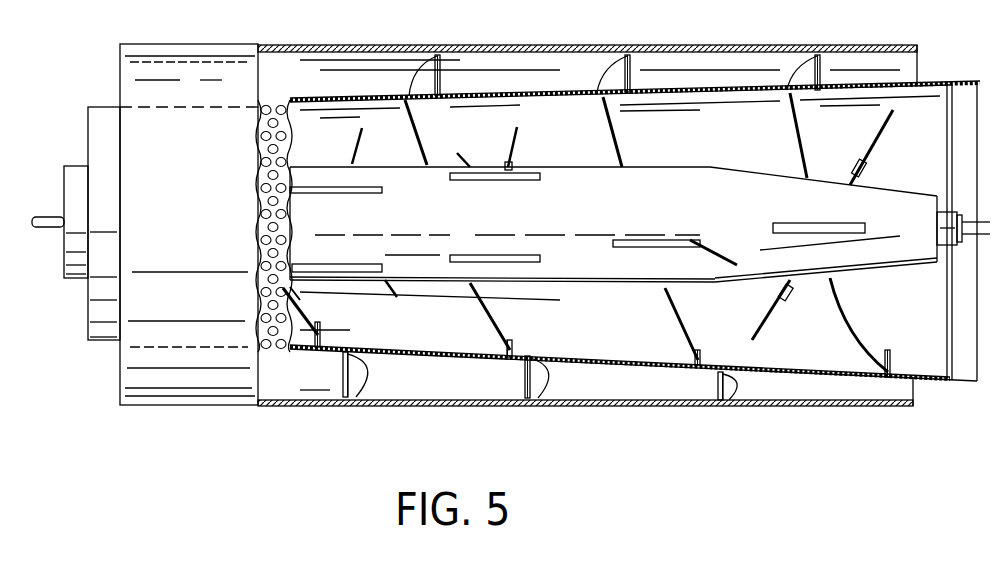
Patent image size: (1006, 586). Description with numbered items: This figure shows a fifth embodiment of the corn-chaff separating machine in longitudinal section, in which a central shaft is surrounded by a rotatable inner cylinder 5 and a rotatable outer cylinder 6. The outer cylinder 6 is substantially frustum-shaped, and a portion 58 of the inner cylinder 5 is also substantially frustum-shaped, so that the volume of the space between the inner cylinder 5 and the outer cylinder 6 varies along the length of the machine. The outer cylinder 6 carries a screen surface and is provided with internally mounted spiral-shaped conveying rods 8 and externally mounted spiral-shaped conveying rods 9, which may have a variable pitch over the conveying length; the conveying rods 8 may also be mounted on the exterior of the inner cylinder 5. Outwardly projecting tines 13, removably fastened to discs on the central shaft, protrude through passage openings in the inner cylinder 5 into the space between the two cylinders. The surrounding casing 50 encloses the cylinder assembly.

The inner cylinder 5 is at (564, 176).
The outer cylinder 6 is at (928, 81).
The internally mounted spiral-shaped conveying rods 8 is at (318, 333).
The externally mounted spiral-shaped conveying rods 9 is at (368, 374).
The tines 13 is at (881, 138).
The outer casing 50 is at (642, 406).
The frustum-shaped portion of the inner cylinder 58 is at (822, 196).